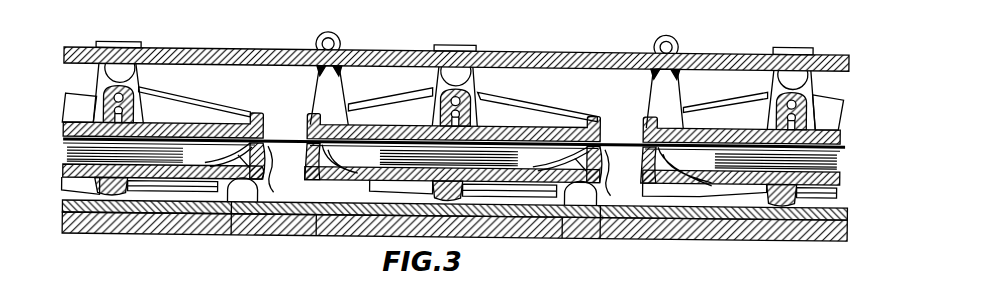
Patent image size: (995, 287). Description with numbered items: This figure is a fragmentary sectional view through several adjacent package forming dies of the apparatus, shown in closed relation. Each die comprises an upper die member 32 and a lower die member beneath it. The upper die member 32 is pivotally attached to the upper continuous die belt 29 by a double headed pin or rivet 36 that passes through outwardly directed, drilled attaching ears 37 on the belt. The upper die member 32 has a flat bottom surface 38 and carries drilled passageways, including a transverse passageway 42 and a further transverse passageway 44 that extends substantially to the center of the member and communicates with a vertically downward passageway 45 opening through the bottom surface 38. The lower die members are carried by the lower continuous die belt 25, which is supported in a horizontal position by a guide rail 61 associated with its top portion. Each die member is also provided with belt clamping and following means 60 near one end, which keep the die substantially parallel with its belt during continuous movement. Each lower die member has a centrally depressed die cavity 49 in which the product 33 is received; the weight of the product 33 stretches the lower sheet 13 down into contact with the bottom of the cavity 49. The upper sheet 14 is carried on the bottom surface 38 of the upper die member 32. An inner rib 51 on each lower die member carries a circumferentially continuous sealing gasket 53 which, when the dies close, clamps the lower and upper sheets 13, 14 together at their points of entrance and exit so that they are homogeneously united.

The lower sheet 13 is at (212, 161).
The upper sheet 14 is at (184, 122).
The lower continuous die belt 25 is at (317, 233).
The upper continuous die belt 29 is at (412, 46).
The upper die member 32 is at (197, 97).
The product 33 is at (78, 150).
The double headed pin or rivet 36 is at (440, 70).
The attaching ears 37 is at (132, 41).
The flat bottom surface 38 is at (214, 122).
The drilled passageway 42 is at (474, 88).
The drilled passageway 44 is at (447, 101).
The drilled passageway 45 is at (472, 113).
The die cavity 49 is at (268, 179).
The inner rib 51 is at (265, 166).
The sealing gasket 53 is at (268, 147).
The belt clamping and following means 60 is at (316, 42).
The guide rail 61 is at (557, 226).